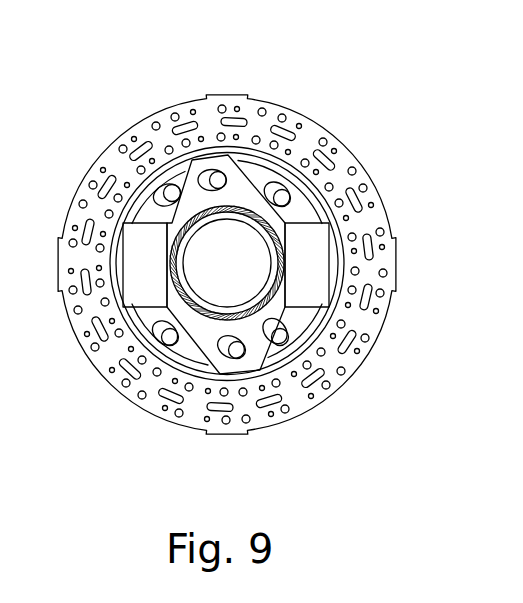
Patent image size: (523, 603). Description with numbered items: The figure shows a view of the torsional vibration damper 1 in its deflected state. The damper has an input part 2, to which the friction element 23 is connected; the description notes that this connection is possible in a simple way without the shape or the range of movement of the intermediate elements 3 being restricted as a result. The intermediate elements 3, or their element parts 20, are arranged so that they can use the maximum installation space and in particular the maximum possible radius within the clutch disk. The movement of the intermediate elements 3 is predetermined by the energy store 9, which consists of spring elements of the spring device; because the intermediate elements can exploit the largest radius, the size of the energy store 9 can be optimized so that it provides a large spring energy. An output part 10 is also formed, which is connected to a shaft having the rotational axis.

The torsional vibration damper 1 is at (123, 412).
The input part 2 is at (289, 163).
The intermediate element 3 is at (342, 197).
The energy store 9 is at (308, 284).
The output part 10 is at (234, 190).
The element part 20 is at (226, 264).
The friction element 23 is at (141, 127).